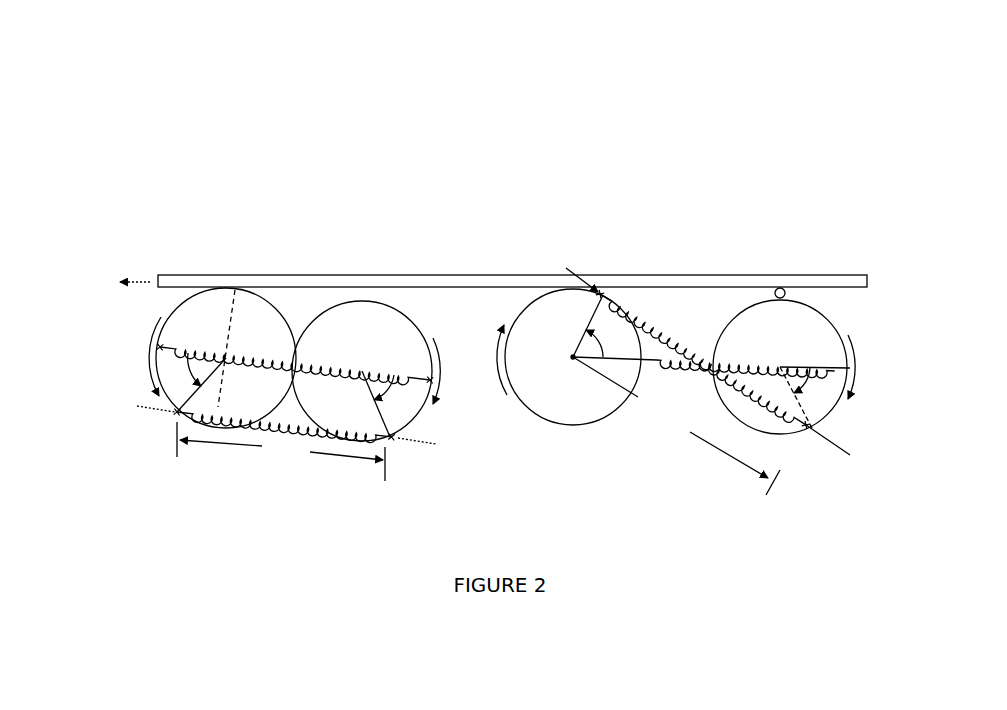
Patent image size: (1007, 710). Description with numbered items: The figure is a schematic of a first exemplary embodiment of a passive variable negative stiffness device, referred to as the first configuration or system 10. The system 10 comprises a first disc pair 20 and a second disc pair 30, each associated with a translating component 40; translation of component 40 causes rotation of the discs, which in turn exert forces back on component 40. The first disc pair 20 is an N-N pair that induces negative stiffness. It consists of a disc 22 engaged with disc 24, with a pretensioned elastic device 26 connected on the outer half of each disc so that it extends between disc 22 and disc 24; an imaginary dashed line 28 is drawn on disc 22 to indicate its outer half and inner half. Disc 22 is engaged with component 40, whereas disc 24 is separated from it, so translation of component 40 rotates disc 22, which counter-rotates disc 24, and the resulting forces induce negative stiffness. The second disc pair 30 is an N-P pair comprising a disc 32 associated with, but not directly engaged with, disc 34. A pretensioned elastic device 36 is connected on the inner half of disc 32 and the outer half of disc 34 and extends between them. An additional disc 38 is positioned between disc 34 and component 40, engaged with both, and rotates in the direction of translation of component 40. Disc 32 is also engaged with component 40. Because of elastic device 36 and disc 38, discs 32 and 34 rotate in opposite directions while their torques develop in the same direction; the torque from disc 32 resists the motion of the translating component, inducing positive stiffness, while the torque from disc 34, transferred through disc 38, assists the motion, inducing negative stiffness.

The system 10 is at (567, 143).
The first disc pair 20 is at (223, 575).
The disc 22 is at (168, 310).
The disc 24 is at (418, 413).
The pretensioned elastic device 26 is at (345, 362).
The imaginary dashed line 28 is at (228, 330).
The second disc pair 30 is at (747, 550).
The disc 32 is at (603, 422).
The disc 34 is at (833, 413).
The pretensioned elastic device 36 is at (760, 362).
The additional disc 38 is at (786, 294).
The translating component 40 is at (467, 276).